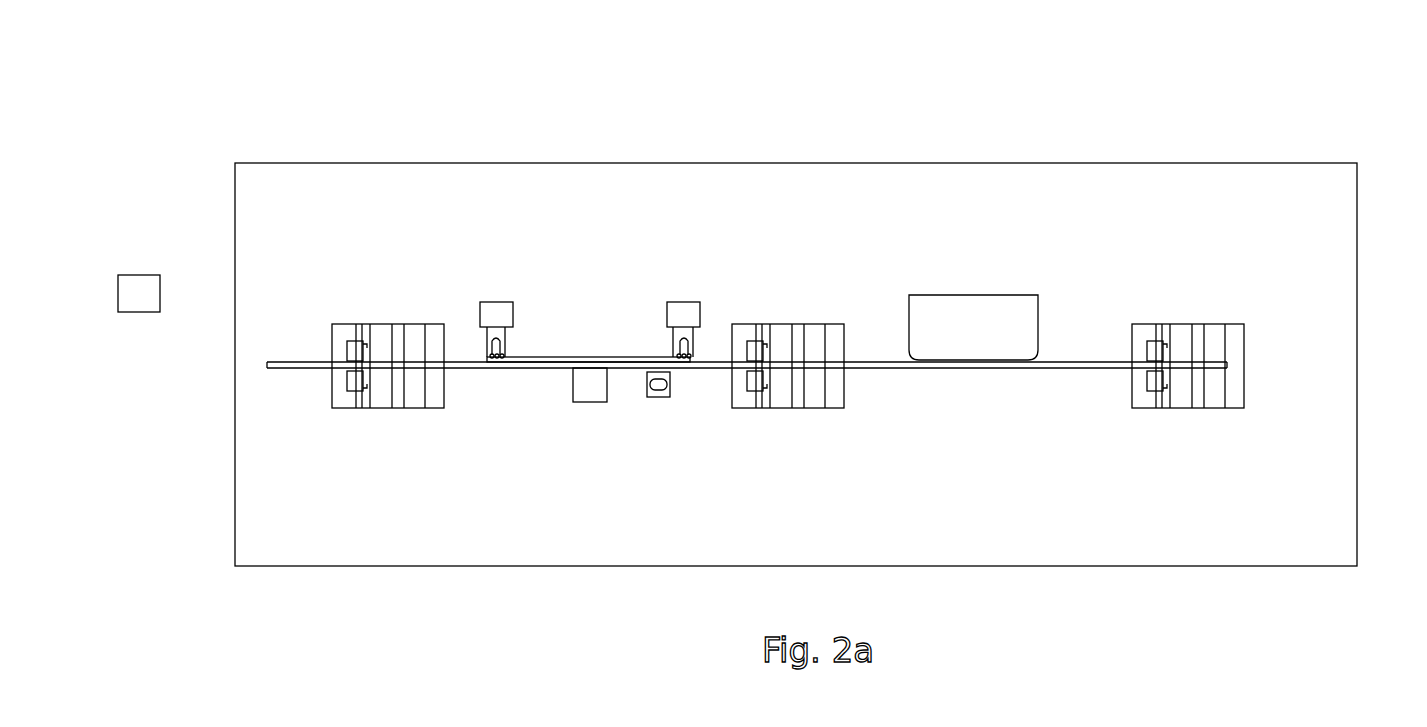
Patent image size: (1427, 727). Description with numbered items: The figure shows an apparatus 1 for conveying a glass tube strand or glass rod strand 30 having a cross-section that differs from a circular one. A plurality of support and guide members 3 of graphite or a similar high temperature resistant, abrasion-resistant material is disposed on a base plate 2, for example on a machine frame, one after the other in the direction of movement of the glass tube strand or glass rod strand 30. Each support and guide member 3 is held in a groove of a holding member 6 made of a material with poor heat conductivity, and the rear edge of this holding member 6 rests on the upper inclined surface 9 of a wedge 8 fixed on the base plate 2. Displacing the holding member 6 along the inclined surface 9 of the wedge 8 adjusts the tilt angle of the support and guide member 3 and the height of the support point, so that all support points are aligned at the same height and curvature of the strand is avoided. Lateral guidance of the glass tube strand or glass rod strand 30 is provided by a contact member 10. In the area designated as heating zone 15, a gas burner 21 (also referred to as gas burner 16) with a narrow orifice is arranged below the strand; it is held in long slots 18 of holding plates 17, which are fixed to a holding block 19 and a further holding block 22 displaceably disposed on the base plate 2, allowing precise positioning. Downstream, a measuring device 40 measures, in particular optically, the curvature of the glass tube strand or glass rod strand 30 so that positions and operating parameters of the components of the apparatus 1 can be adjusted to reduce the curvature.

The apparatus 1 is at (957, 95).
The base plate 2 is at (1347, 208).
The support and guide member 3 is at (1150, 325).
The holding member 6 is at (1180, 335).
The wedge 8 is at (1213, 336).
The upper inclined surface 9 is at (1212, 335).
The contact member 10 is at (1002, 305).
The heating zone 15 is at (602, 258).
The gas burner 16 is at (505, 355).
The holding plate 17 is at (500, 355).
The long slot 18 is at (700, 340).
The holding block 19 is at (687, 302).
The gas burner 21 is at (532, 373).
The holding block 22 is at (590, 392).
The glass tube strand or glass rod strand 30 is at (1073, 368).
The measuring device 40 is at (140, 285).